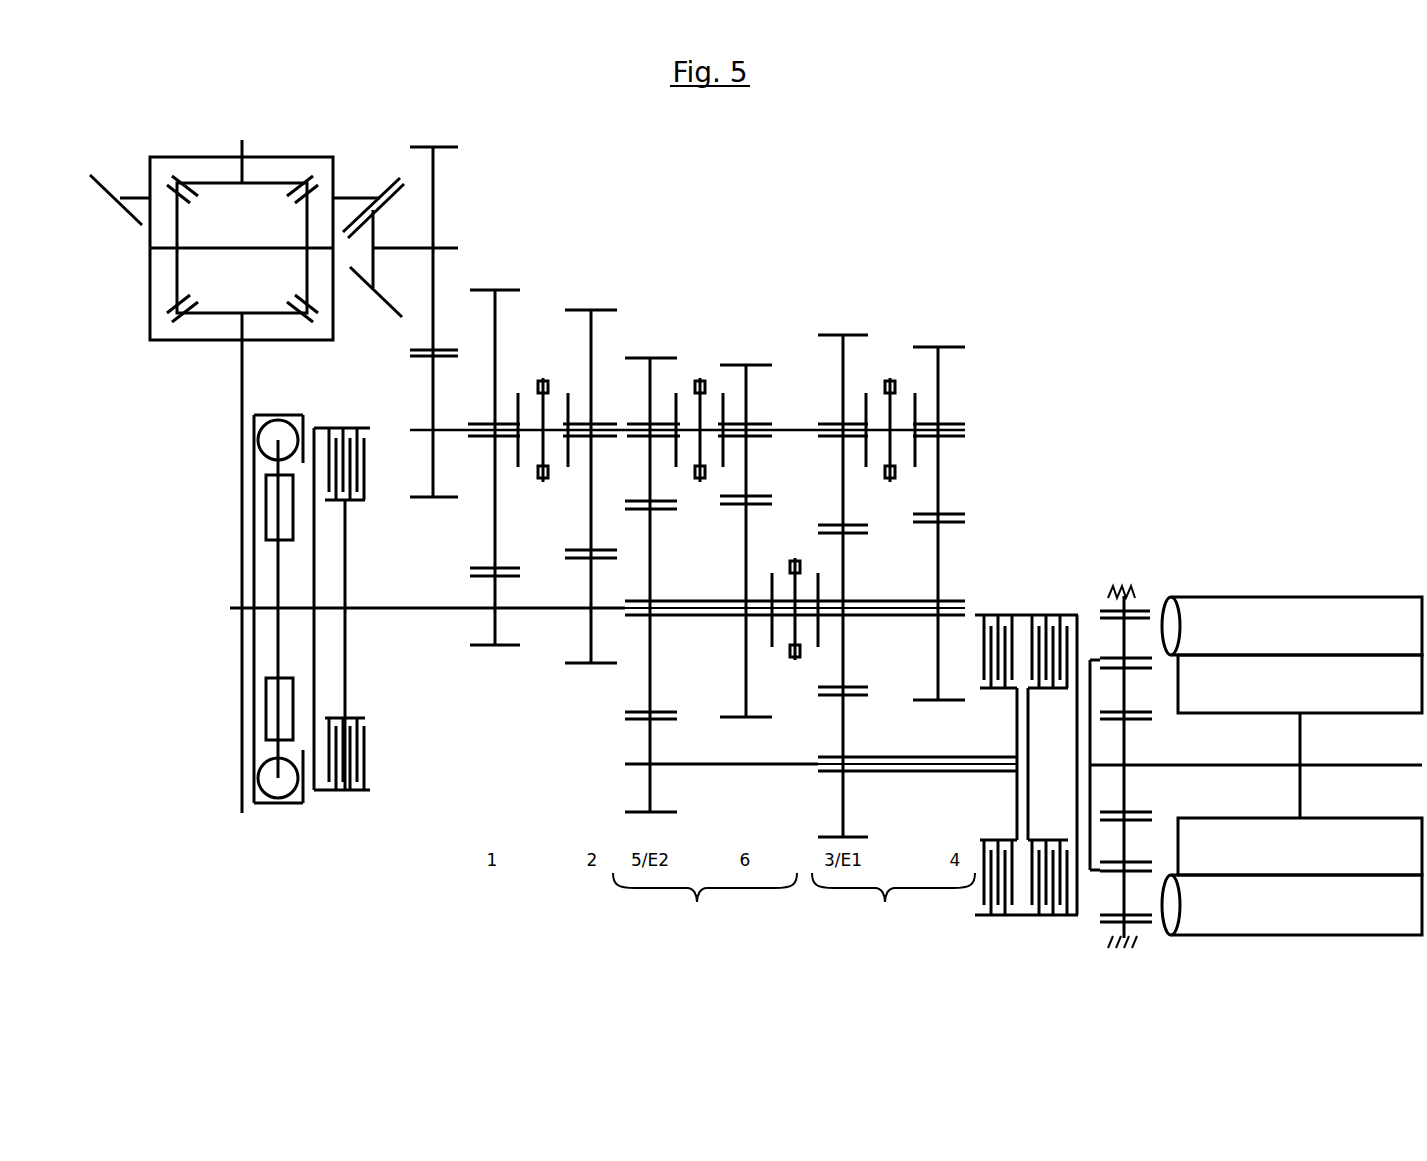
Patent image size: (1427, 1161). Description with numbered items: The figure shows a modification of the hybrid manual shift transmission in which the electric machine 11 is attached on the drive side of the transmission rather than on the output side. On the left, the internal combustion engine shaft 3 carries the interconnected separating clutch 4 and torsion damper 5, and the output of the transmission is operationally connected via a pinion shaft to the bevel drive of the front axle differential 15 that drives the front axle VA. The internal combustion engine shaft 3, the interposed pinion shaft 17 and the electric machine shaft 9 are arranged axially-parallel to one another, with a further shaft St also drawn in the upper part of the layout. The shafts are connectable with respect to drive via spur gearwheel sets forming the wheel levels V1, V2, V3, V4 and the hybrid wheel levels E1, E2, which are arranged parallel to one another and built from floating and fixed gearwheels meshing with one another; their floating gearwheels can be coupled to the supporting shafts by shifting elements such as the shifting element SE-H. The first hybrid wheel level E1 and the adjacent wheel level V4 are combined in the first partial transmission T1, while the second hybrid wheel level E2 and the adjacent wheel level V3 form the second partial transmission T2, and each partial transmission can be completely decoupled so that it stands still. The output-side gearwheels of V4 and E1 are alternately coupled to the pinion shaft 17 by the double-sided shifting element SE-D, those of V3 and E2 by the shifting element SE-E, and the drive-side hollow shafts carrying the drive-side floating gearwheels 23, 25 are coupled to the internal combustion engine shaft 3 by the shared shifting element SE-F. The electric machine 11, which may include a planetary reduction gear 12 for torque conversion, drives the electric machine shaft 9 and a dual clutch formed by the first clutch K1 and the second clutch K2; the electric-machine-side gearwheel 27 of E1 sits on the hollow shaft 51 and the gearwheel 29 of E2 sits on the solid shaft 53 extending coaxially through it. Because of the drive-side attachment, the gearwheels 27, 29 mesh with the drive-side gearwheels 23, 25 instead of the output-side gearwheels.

The front axle differential 15 is at (280, 155).
The front axle VA is at (242, 398).
The spur gear stage shaft St is at (434, 301).
The pinion shaft 17 is at (410, 428).
The internal combustion engine shaft 3 is at (405, 607).
The separating clutch 4 is at (350, 792).
The torsion damper 5 is at (280, 805).
The electric machine shaft 9 is at (1086, 768).
The electric machine 11 is at (1270, 596).
The planetary reduction gear 12 is at (1106, 598).
The drive-side floating gearwheel 23 is at (845, 643).
The drive-side floating gearwheel 25 is at (652, 662).
The electric-machine-side gearwheel 27 is at (842, 730).
The electric-machine-side gearwheel 29 is at (648, 738).
The hollow shaft 51 is at (928, 773).
The solid shaft 53 is at (718, 766).
The first clutch K1 is at (998, 614).
The second clutch K2 is at (1047, 614).
The wheel level V1 is at (495, 449).
The wheel level V2 is at (591, 466).
The wheel level V3 is at (746, 525).
The wheel level V4 is at (939, 503).
The first hybrid wheel level E1 is at (843, 567).
The second hybrid wheel level E2 is at (651, 566).
The shifting element SE-H is at (544, 409).
The shifting element SE-E is at (700, 378).
The shifting element SE-D is at (890, 378).
The shifting element SE-F is at (795, 558).
The first partial transmission T1 is at (893, 909).
The second partial transmission T2 is at (705, 909).